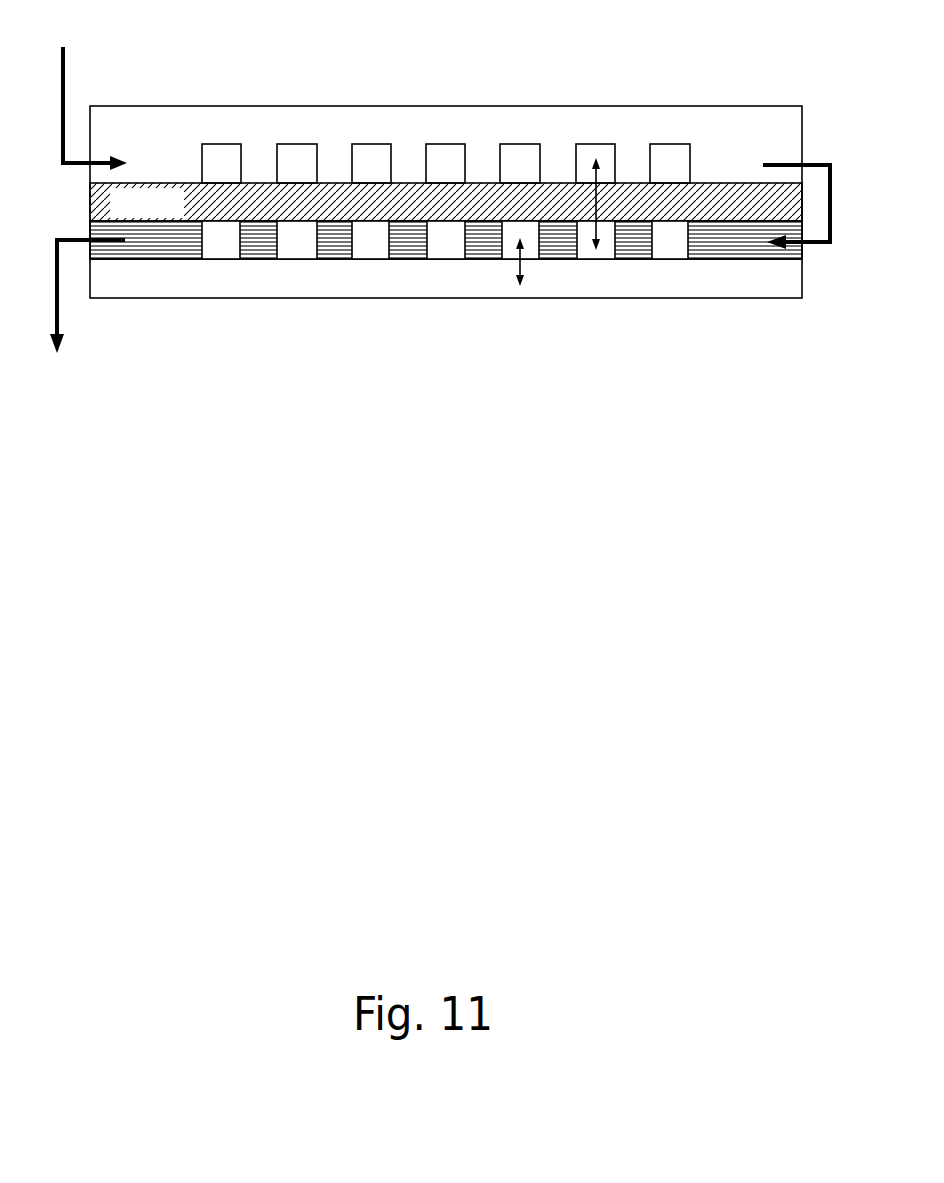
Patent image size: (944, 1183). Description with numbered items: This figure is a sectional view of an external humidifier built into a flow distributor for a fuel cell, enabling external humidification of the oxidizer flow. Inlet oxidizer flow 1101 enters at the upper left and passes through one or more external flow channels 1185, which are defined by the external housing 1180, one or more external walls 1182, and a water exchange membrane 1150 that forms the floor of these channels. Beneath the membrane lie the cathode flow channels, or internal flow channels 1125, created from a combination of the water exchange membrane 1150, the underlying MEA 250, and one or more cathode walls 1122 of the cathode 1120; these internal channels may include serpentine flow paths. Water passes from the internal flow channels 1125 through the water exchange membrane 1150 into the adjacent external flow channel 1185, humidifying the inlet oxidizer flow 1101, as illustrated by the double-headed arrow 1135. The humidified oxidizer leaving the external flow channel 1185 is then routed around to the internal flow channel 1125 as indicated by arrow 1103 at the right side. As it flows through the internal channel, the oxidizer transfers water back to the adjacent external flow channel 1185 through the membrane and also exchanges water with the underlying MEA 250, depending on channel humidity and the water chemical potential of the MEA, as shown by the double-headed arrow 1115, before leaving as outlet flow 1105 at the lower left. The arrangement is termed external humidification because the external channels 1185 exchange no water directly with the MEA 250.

The external housing 1180 is at (755, 106).
The water exchange membrane 1150 is at (179, 216).
The cathode 1120 is at (745, 262).
The MEA 250 is at (150, 291).
The external flow channel 1185 is at (222, 163).
The external wall 1182 is at (335, 163).
The internal flow channel 1125 is at (222, 240).
The cathode wall 1122 is at (410, 262).
The double-headed arrow 1135 is at (594, 160).
The double-headed arrow 1115 is at (515, 267).
The inlet oxidizer flow 1101 is at (66, 77).
The outlet flow 1105 is at (62, 315).
The arrow 1103 is at (820, 247).